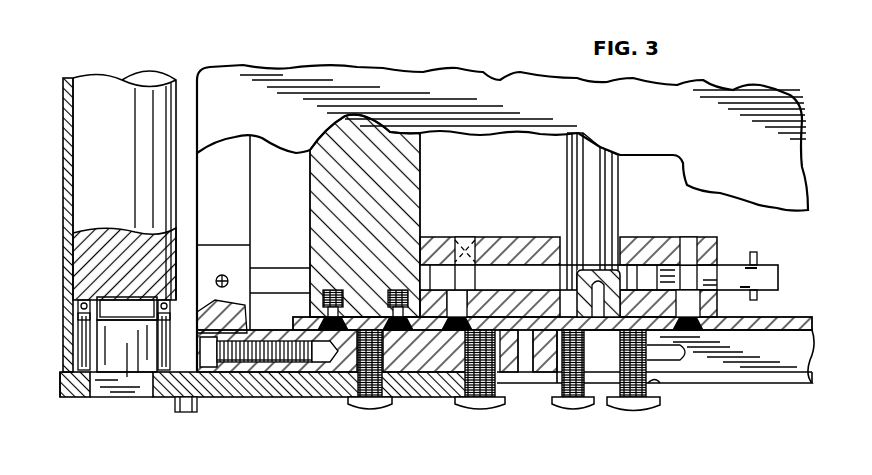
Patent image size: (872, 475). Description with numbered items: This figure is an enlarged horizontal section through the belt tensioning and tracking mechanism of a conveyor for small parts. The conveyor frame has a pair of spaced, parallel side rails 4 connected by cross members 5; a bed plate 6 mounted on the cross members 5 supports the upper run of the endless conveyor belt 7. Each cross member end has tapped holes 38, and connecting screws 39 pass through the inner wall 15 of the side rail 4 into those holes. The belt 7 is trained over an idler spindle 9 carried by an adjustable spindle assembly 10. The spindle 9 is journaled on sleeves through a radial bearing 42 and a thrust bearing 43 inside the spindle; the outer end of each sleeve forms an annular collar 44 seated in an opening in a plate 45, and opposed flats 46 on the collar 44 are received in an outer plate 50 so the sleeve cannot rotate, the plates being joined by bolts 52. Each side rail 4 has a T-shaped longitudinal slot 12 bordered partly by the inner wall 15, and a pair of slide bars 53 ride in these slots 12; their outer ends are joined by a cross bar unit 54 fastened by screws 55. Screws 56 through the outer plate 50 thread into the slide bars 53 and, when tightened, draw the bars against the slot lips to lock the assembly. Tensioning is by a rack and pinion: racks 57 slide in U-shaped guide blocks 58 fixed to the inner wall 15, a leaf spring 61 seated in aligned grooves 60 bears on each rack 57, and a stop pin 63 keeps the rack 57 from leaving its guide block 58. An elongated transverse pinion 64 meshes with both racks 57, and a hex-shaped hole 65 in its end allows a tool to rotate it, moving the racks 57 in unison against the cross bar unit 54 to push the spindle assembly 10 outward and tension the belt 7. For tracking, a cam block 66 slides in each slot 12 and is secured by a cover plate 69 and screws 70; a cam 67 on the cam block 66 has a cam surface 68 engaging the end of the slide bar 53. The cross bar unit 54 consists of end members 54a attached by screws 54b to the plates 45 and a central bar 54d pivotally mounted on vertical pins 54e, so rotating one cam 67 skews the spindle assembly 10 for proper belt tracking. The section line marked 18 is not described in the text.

The side rail 4 is at (806, 386).
The cross member 5 is at (418, 176).
The bed plate 6 is at (527, 85).
The conveyor belt 7 is at (63, 130).
The idler spindle 9 is at (112, 88).
The spindle assembly 10 is at (76, 402).
The longitudinal slot 12 is at (718, 362).
The inner wall 15 is at (788, 318).
The section line 18 is at (245, 190).
The tapped hole 38 is at (328, 290).
The connecting screw 39 is at (390, 300).
The radial bearing 42 is at (70, 323).
The thrust bearing 43 is at (82, 300).
The annular collar 44 is at (147, 380).
The plate 45 is at (70, 373).
The flats 46 is at (112, 398).
The outer plate 50 is at (317, 397).
The bolt 52 is at (197, 416).
The slide bar 53 is at (421, 362).
The cross bar unit 54 is at (256, 218).
The end member 54a is at (215, 262).
The screw 54b is at (247, 290).
The central bar 54d is at (237, 153).
The vertical pin 54e is at (234, 277).
The screw 55 is at (273, 358).
The screw 56 is at (364, 413).
The rack 57 is at (664, 265).
The guide block 58 is at (533, 250).
The aligned grooves 60 is at (493, 243).
The leaf spring 61 is at (509, 268).
The stop pin 63 is at (757, 254).
The pinion 64 is at (566, 164).
The hex-shaped hole 65 is at (596, 272).
The cam block 66 is at (675, 370).
The cam 67 is at (512, 375).
The cam surface 68 is at (546, 385).
The cover plate 69 is at (660, 397).
The screw 70 is at (626, 408).